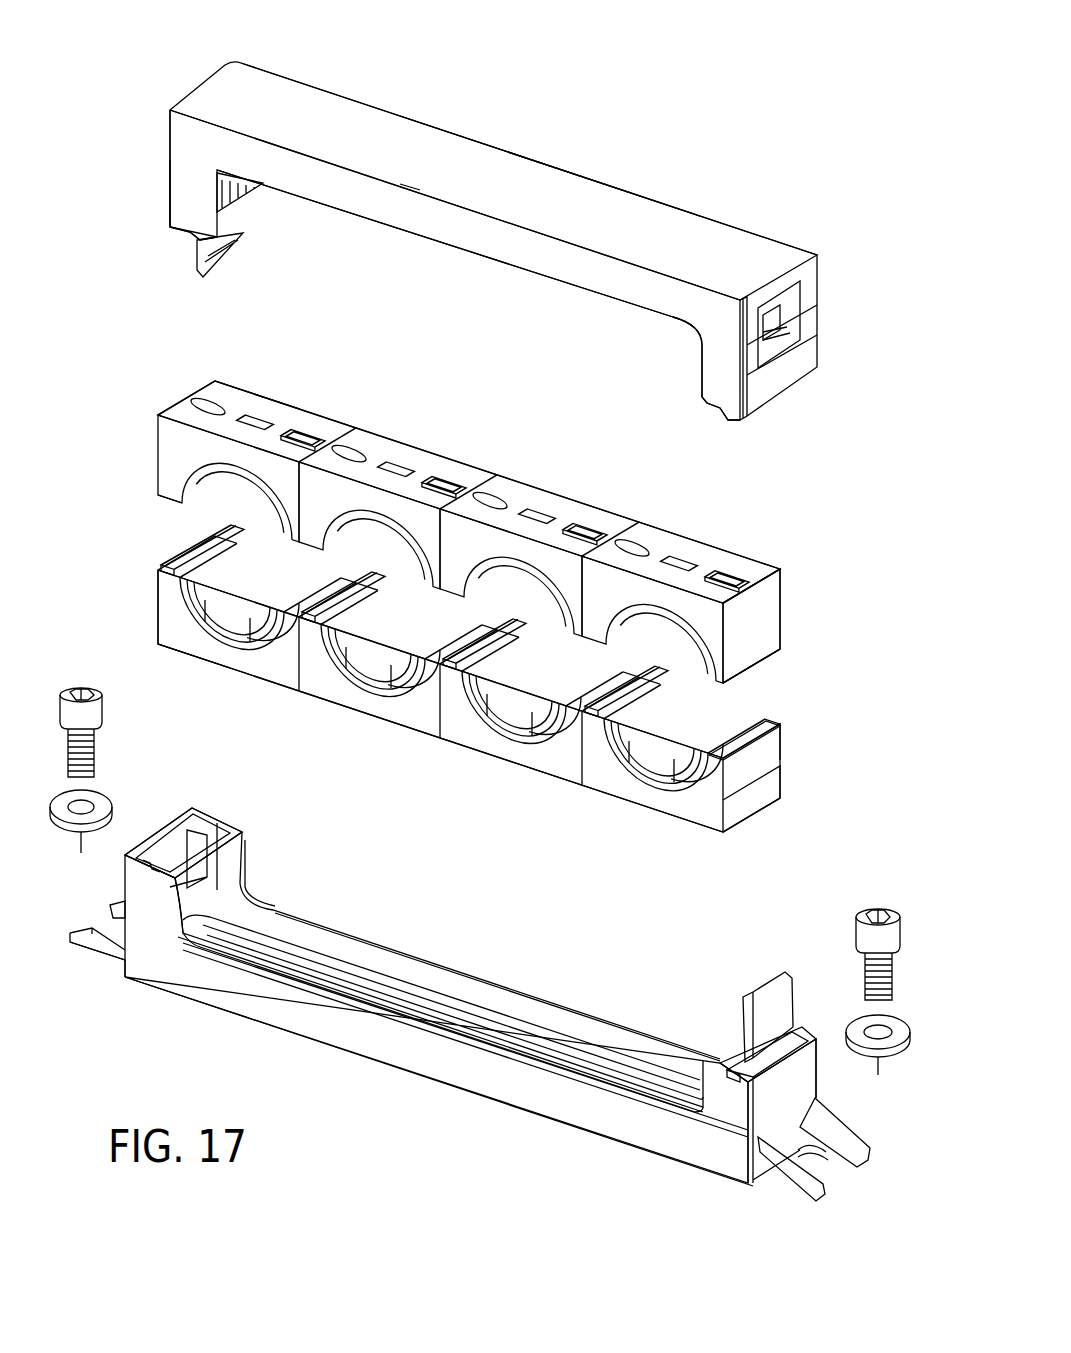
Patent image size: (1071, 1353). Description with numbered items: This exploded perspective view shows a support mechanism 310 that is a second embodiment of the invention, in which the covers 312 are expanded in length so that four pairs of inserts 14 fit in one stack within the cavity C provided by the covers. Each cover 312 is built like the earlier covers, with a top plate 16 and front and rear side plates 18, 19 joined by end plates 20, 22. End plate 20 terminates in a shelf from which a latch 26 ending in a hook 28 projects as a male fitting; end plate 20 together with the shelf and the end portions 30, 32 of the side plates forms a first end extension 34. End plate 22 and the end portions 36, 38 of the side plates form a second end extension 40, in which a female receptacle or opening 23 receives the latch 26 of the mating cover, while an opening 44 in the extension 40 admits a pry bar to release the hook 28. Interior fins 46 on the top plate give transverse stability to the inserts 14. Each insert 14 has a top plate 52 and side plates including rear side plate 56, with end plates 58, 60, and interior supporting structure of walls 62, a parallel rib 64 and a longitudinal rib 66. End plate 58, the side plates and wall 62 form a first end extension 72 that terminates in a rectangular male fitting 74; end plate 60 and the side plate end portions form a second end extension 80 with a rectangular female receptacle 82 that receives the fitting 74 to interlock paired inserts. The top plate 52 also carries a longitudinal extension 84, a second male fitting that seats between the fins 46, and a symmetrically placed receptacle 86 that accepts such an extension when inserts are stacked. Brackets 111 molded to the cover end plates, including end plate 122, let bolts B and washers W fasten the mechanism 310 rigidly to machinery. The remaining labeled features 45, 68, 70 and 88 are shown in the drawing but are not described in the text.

The support mechanism 310 is at (798, 210).
The covers 312 is at (688, 207).
The inserts 14 is at (155, 440).
The top plate 16 is at (268, 105).
The front side plate 18 is at (490, 245).
The rear side plate 19 is at (545, 158).
The end plate 20 is at (168, 152).
The end plate 22 is at (800, 350).
The female receptacle or opening 23 is at (780, 330).
The latch 26 is at (237, 221).
The hook 28 is at (240, 253).
The end portion of side plate 30 is at (183, 205).
The end portion of side plate 32 is at (825, 1060).
The first end extension 34 is at (168, 183).
The end portion of side plate 36 is at (705, 370).
The end portion of side plate 38 is at (817, 280).
The second end extension 40 is at (765, 393).
The opening 44 is at (795, 300).
The notch 45 is at (183, 230).
The fins 46 is at (648, 1060).
The top plate 52 is at (373, 447).
The rear side plate 56 is at (748, 625).
The end plate 58 is at (763, 598).
The end plate 60 is at (195, 400).
The interior walls 62 is at (245, 558).
The rib 64 is at (272, 608).
The longitudinally extending rib 66 is at (248, 585).
The conduit receiving channel 68 is at (430, 565).
The bottom face of block 70 is at (182, 632).
The first end extension 72 is at (168, 590).
The first male fitting 74 is at (185, 568).
The second end extension 80 is at (755, 782).
The female receptacle or opening 82 is at (323, 585).
The longitudinally extending extension 84 is at (305, 430).
The receptacle or opening 86 is at (208, 405).
The aperture 88 is at (255, 420).
The bracket 111 is at (90, 958).
The end plate 122 is at (118, 972).
The bolts B is at (105, 722).
The washers W is at (100, 790).
The cavity C is at (342, 222).